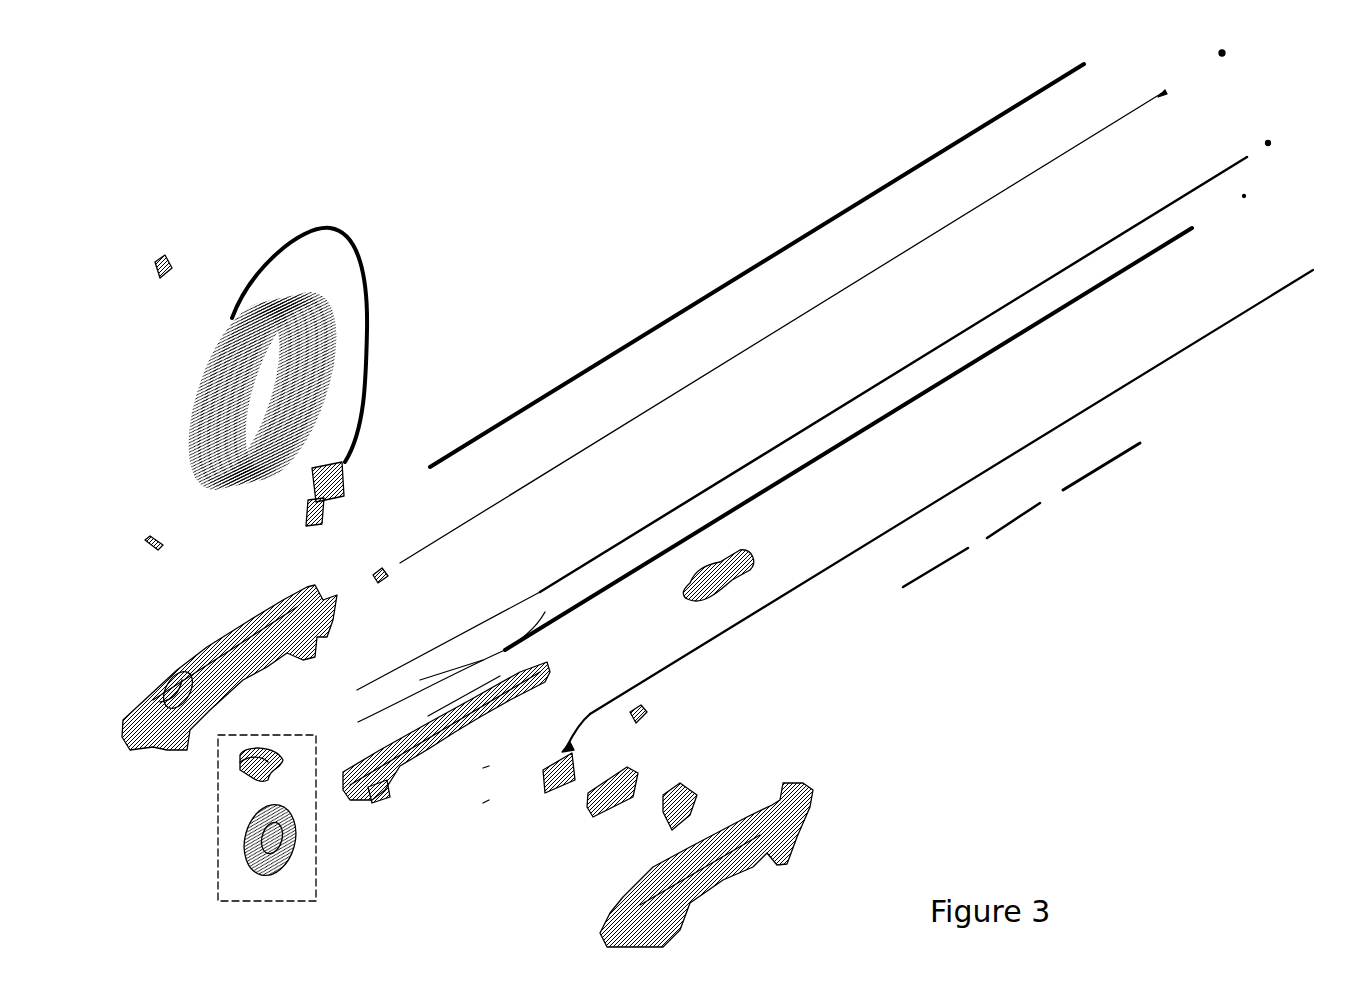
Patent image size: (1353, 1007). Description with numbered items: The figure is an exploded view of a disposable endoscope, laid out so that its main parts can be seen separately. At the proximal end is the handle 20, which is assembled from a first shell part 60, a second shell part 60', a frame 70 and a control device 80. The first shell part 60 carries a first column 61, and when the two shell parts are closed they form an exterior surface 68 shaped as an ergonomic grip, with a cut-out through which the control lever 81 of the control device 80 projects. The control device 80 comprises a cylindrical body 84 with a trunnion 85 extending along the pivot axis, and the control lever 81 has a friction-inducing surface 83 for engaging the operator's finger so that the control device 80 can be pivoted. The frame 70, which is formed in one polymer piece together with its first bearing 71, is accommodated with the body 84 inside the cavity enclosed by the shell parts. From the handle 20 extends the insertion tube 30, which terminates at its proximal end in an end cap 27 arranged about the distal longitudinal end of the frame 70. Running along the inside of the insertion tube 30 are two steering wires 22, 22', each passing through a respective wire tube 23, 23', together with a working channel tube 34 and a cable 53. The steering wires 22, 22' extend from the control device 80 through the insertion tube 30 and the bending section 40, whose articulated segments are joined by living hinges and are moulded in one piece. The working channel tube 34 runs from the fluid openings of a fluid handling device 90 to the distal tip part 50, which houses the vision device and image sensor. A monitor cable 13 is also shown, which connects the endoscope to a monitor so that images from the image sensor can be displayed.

The monitor cable 13 is at (368, 263).
The handle 20 is at (630, 264).
The insertion tube 30 is at (518, 400).
The cable 53 is at (455, 525).
The wire tube 23 is at (848, 439).
The steering wire 22 is at (802, 423).
The steering wire 22' is at (430, 666).
The wire tube 23' is at (505, 598).
The working channel tube 34 is at (875, 537).
The end cap 27 is at (745, 568).
The bending section 40 is at (947, 568).
The distal tip part 50 is at (907, 587).
The first shell part 60 is at (229, 635).
The first column 61 is at (160, 702).
The exterior surface 68 is at (168, 673).
The control device 80 is at (217, 880).
The control lever 81 is at (242, 770).
The friction-inducing surface 83 is at (260, 748).
The cylindrical body 84 is at (283, 873).
The trunnion 85 is at (293, 847).
The frame 70 is at (432, 768).
The first bearing 71 is at (387, 797).
The fluid handling device 90 is at (690, 775).
The second shell part 60' is at (788, 862).